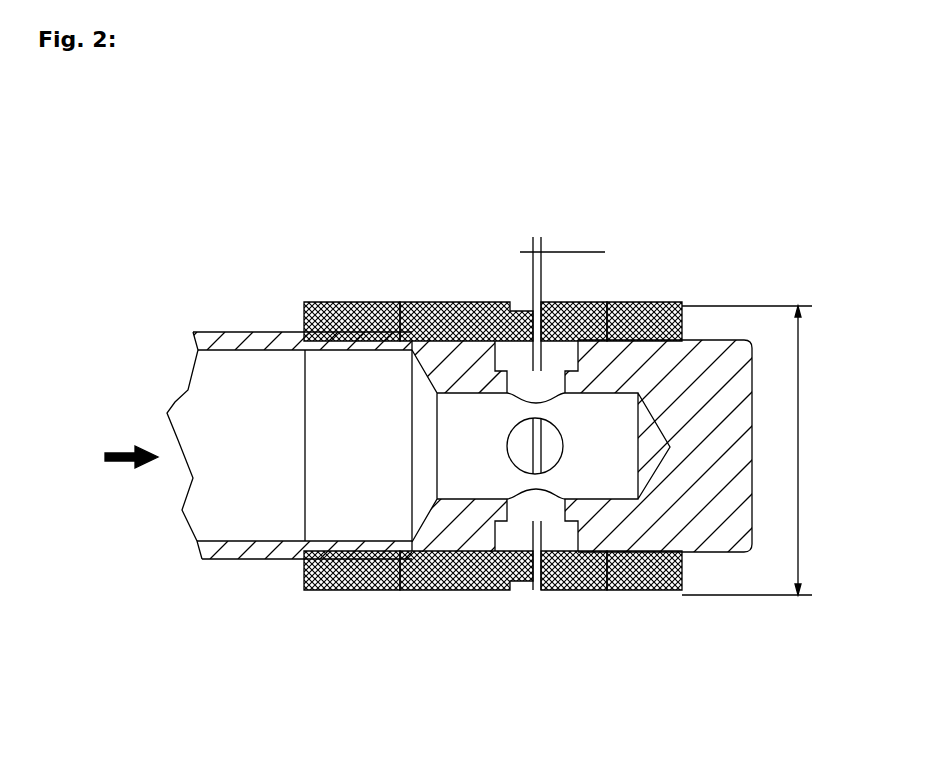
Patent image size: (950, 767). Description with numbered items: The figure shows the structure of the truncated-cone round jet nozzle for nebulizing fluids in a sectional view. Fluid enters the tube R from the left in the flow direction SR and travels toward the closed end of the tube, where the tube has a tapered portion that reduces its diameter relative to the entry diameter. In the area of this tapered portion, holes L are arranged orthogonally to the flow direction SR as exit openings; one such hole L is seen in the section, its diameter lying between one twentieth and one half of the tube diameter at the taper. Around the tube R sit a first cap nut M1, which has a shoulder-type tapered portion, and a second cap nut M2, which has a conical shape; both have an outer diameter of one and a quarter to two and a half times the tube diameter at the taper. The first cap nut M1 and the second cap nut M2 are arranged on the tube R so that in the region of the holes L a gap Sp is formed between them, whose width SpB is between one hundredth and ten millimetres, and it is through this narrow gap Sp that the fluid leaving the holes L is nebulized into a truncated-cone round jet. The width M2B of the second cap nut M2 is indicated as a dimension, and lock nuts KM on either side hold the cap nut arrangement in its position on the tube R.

The tube R is at (249, 558).
The lock nut KM is at (352, 590).
The first cap nut M1 is at (462, 590).
The second cap nut M2 is at (565, 590).
The gap Sp is at (532, 252).
The gap width SpB is at (564, 232).
The hole L is at (509, 428).
The width of the second cap nut M2B is at (747, 450).
The flow direction SR is at (113, 454).